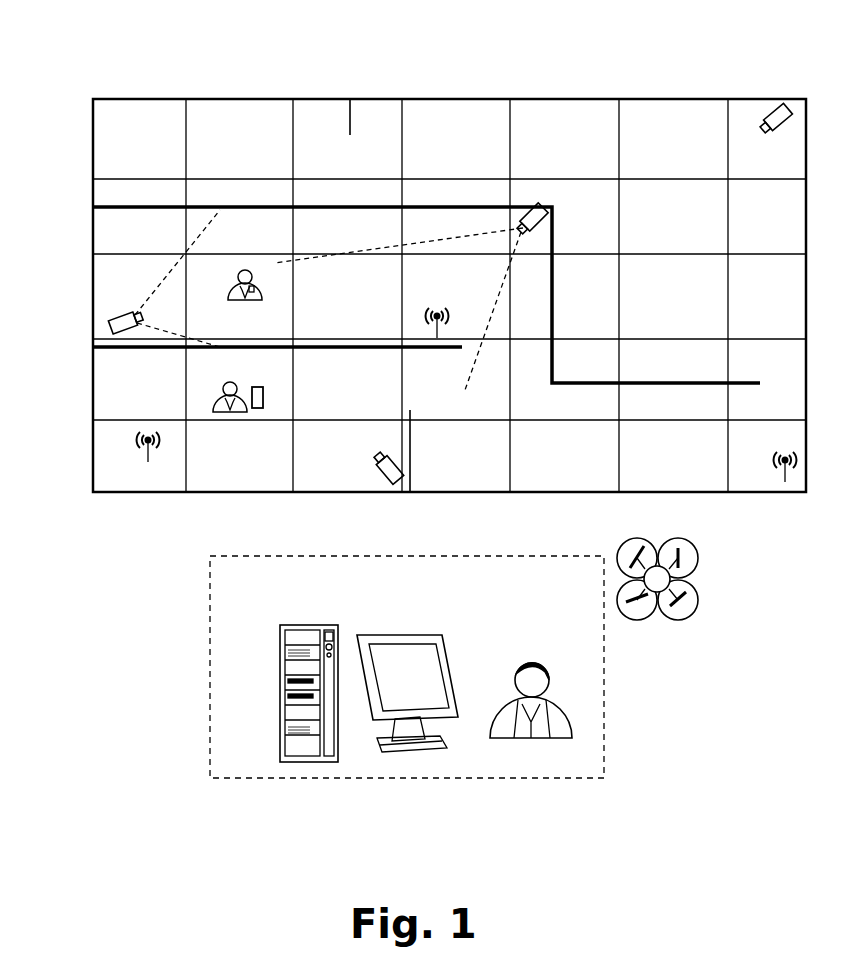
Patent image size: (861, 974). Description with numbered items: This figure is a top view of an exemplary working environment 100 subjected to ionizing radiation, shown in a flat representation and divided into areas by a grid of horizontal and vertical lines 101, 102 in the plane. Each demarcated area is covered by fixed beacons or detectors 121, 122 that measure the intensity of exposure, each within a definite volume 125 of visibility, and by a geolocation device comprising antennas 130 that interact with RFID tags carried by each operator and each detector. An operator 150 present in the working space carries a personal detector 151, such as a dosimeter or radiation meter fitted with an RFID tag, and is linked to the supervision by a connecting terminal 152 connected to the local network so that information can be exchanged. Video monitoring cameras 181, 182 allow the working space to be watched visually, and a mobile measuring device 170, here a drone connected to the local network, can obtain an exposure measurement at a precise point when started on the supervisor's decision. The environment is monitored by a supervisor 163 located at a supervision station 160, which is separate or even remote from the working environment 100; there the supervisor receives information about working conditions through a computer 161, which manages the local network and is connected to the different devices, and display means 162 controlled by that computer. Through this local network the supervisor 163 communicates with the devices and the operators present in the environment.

The working environment 100 is at (176, 66).
The horizontal lines 101 is at (110, 178).
The vertical lines 102 is at (727, 118).
The fixed beacon 121 is at (112, 318).
The fixed beacon 122 is at (527, 210).
The volume of visibility 125 is at (457, 237).
The antenna 130 is at (140, 455).
The operator 150 is at (227, 287).
The personal detector 151 is at (260, 290).
The connecting terminal 152 is at (257, 410).
The supervision station 160 is at (210, 592).
The computer 161 is at (282, 660).
The display means 162 is at (410, 635).
The supervisor 163 is at (527, 663).
The mobile measuring device 170 is at (610, 538).
The video monitoring camera 181 is at (378, 478).
The video monitoring camera 182 is at (770, 112).